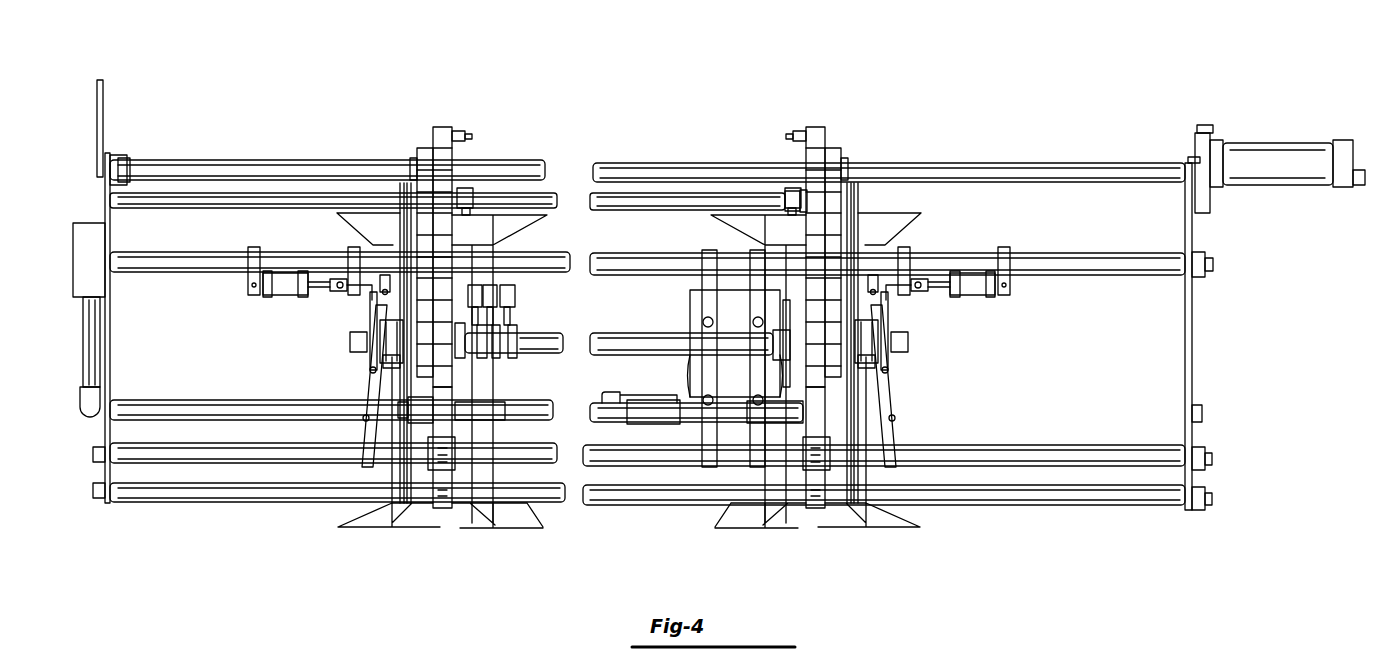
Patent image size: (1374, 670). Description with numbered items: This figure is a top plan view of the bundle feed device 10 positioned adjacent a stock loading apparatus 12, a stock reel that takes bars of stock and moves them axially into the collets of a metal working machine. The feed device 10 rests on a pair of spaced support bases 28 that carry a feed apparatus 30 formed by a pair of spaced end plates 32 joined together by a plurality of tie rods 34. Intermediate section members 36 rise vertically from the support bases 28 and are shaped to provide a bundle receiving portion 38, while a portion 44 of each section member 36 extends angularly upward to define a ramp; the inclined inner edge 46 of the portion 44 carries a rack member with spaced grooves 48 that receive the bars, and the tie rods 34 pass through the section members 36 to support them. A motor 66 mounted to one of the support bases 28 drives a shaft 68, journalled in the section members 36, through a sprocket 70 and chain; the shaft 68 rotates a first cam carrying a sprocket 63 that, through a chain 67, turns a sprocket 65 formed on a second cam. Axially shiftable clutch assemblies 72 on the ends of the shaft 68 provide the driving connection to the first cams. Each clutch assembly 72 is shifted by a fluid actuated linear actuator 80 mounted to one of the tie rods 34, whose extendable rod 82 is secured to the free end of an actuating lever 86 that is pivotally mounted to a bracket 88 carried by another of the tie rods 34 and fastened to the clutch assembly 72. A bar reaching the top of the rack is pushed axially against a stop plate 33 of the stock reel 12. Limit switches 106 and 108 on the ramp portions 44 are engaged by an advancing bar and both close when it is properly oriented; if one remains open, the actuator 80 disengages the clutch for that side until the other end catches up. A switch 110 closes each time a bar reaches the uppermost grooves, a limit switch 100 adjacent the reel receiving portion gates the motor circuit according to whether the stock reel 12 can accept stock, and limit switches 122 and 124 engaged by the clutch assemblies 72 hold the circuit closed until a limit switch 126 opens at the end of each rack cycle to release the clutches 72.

The bundle feed device 10 is at (1220, 376).
The stock loading apparatus 12 is at (113, 119).
The support bases 28 is at (518, 526).
The feed apparatus 30 is at (666, 156).
The end plates 32 is at (110, 373).
The stop plate 33 is at (107, 92).
The tie rods 34 is at (306, 160).
The intermediate section members 36 is at (445, 510).
The bundle receiving portion 38 is at (472, 430).
The ramp portion 44 is at (485, 215).
The inclined inner edge 46 is at (451, 157).
The spaced grooves 48 is at (470, 192).
The sprocket 63 is at (408, 363).
The sprocket 65 is at (402, 183).
The motor 66 is at (670, 375).
The chain 67 is at (401, 233).
The shaft 68 is at (672, 303).
The sprocket 70 is at (767, 302).
The clutch assemblies 72 is at (352, 354).
The fluid actuated linear actuator 80 is at (287, 293).
The extendable rod 82 is at (322, 290).
The actuating lever 86 is at (373, 358).
The bracket 88 is at (366, 434).
The limit switch 100 is at (475, 282).
The limit switch 106 is at (463, 130).
The limit switch 108 is at (795, 132).
The switch 110 is at (495, 290).
The limit switch 122 is at (360, 268).
The limit switch 124 is at (922, 275).
The limit switch 126 is at (518, 296).